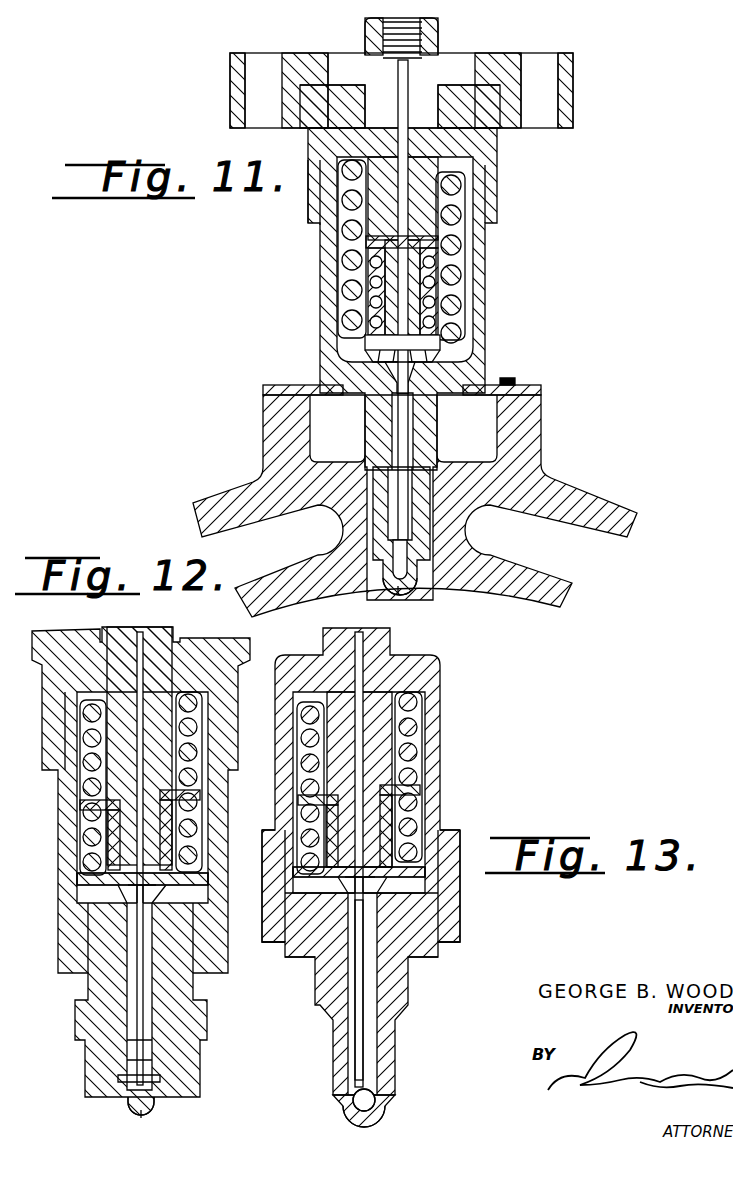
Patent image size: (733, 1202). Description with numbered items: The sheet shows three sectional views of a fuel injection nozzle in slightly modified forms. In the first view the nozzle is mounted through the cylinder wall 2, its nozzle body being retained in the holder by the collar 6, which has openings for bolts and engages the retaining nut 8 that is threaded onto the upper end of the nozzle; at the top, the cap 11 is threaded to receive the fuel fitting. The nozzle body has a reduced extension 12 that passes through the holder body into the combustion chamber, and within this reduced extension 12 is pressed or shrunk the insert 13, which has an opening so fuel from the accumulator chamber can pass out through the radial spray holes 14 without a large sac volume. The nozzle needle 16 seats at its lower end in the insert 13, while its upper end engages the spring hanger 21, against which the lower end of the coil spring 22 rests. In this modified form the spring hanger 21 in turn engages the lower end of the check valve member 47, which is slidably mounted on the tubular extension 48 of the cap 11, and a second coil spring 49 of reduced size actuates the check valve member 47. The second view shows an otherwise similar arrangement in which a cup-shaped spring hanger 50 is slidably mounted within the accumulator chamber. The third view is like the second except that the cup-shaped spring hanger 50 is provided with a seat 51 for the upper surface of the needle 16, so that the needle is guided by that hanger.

In FIG. 11, the cylinder wall 2 is at (578, 497).
In FIG. 11, the collar 6 is at (576, 90).
In FIG. 11, the retaining nut 8 is at (318, 212).
In FIG. 11, the cap 11 is at (470, 148).
In FIG. 11, the reduced extension 12 is at (398, 567).
In FIG. 12, the reduced extension 12 is at (126, 1100).
In FIG. 13, the reduced extension 12 is at (335, 1104).
In FIG. 11, the insert 13 is at (443, 592).
In FIG. 13, the insert 13 is at (382, 1107).
In FIG. 11, the radial spray holes 14 is at (394, 600).
In FIG. 12, the radial spray holes 14 is at (142, 1117).
In FIG. 13, the nozzle needle 16 is at (364, 1013).
In FIG. 11, the spring hanger 21 is at (447, 340).
In FIG. 11, the coil spring 22 is at (348, 322).
In FIG. 12, the coil spring 22 is at (84, 794).
In FIG. 13, the coil spring 22 is at (418, 750).
In FIG. 11, the check valve member 47 is at (440, 318).
In FIG. 11, the tubular extension 48 is at (430, 290).
In FIG. 11, the spring retainer 49 is at (453, 260).
In FIG. 12, the spring retainer 49 is at (62, 826).
In FIG. 13, the spring retainer 49 is at (393, 788).
In FIG. 12, the cup-shaped spring hanger 50 is at (77, 890).
In FIG. 13, the cup-shaped spring hanger 50 is at (390, 883).
In FIG. 13, the seat 51 is at (452, 915).